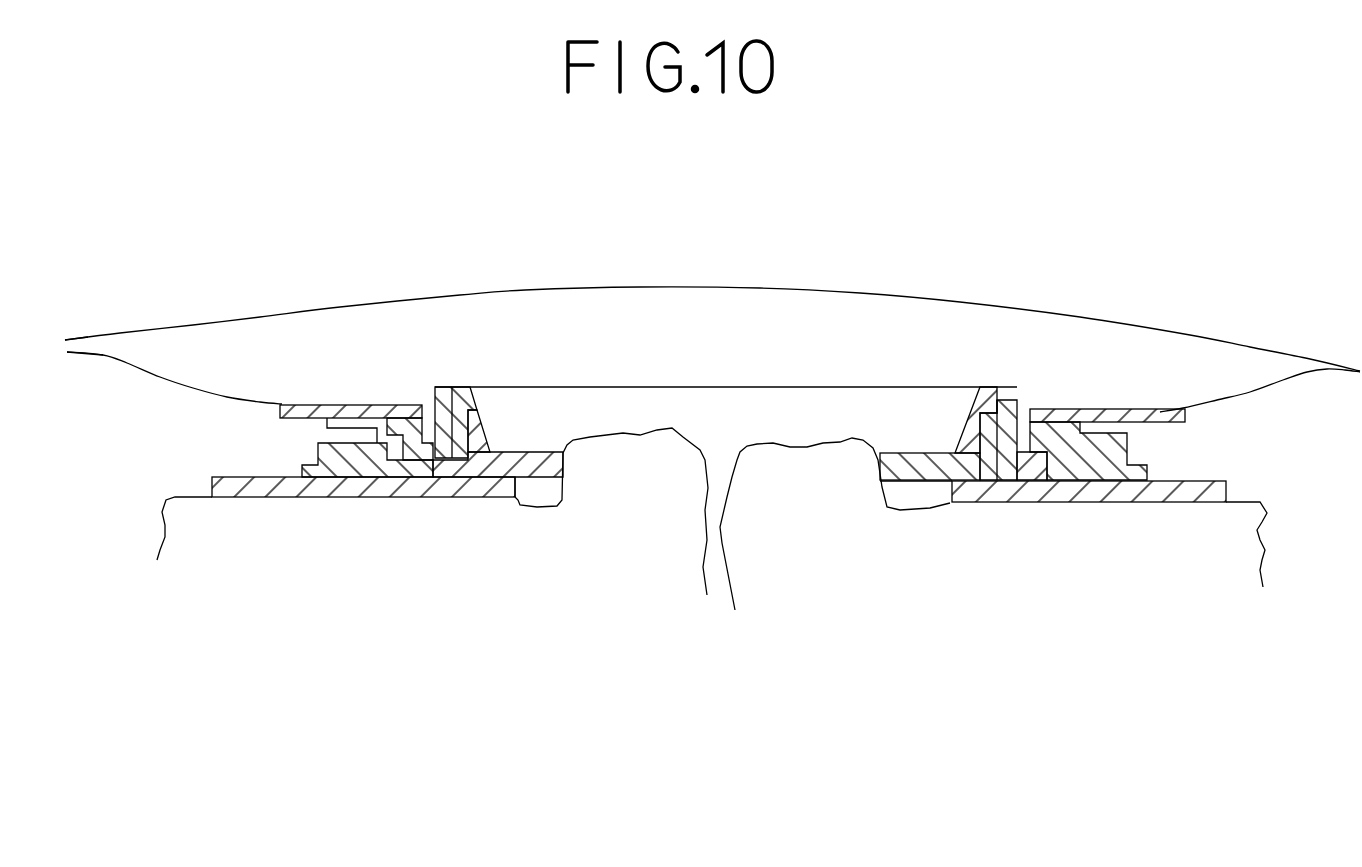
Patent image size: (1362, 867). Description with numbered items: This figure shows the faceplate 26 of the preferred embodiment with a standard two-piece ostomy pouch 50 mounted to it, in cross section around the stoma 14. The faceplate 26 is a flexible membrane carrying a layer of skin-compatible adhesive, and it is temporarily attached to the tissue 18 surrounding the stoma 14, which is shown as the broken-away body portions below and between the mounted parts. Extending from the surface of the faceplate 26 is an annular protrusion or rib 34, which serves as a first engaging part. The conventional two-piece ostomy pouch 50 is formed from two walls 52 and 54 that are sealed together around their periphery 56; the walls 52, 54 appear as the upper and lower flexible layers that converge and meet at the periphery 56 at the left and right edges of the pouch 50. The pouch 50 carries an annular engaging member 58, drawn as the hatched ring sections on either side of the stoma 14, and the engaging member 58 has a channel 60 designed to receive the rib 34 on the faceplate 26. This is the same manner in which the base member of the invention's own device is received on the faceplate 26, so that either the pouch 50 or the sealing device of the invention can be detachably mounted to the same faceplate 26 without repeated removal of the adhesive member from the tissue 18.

The stoma 14 is at (643, 440).
The tissue 18 is at (1210, 529).
The faceplate 26 is at (285, 498).
The annular protrusion or rib 34 is at (1022, 387).
The two-piece ostomy pouch 50 is at (342, 292).
The wall 52 is at (525, 290).
The wall 54 is at (223, 392).
The periphery 56 is at (87, 336).
The annular engaging member 58 is at (1187, 422).
The channel 60 is at (993, 383).